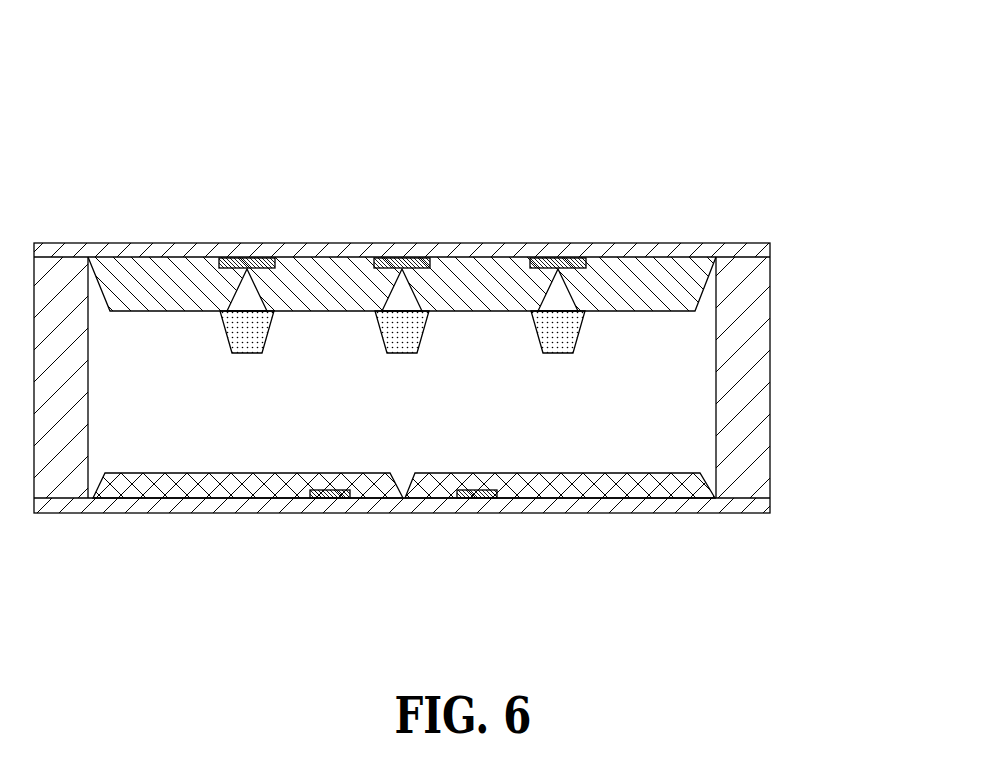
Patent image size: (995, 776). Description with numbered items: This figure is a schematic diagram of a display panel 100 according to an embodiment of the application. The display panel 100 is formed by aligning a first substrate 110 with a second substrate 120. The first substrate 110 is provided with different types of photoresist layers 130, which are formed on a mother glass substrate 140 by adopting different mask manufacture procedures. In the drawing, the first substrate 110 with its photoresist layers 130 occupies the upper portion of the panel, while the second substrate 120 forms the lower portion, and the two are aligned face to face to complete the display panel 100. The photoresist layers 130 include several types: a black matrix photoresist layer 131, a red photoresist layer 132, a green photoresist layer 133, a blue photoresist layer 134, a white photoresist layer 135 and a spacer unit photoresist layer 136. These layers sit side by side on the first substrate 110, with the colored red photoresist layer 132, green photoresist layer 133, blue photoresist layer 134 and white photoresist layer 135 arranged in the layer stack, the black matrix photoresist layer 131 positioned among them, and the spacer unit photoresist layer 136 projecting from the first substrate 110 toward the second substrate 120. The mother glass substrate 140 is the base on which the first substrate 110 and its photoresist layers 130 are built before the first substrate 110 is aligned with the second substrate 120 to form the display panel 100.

The display panel 100 is at (787, 270).
The first substrate 110 is at (418, 195).
The second substrate 120 is at (413, 515).
The photoresist layers 130 is at (662, 158).
The black matrix photoresist layer 131 is at (575, 262).
The red photoresist layer 132 is at (193, 290).
The green photoresist layer 133 is at (342, 292).
The blue photoresist layer 134 is at (490, 290).
The white photoresist layer 135 is at (626, 290).
The spacer unit photoresist layer 136 is at (402, 257).
The mother glass substrate 140 is at (718, 257).